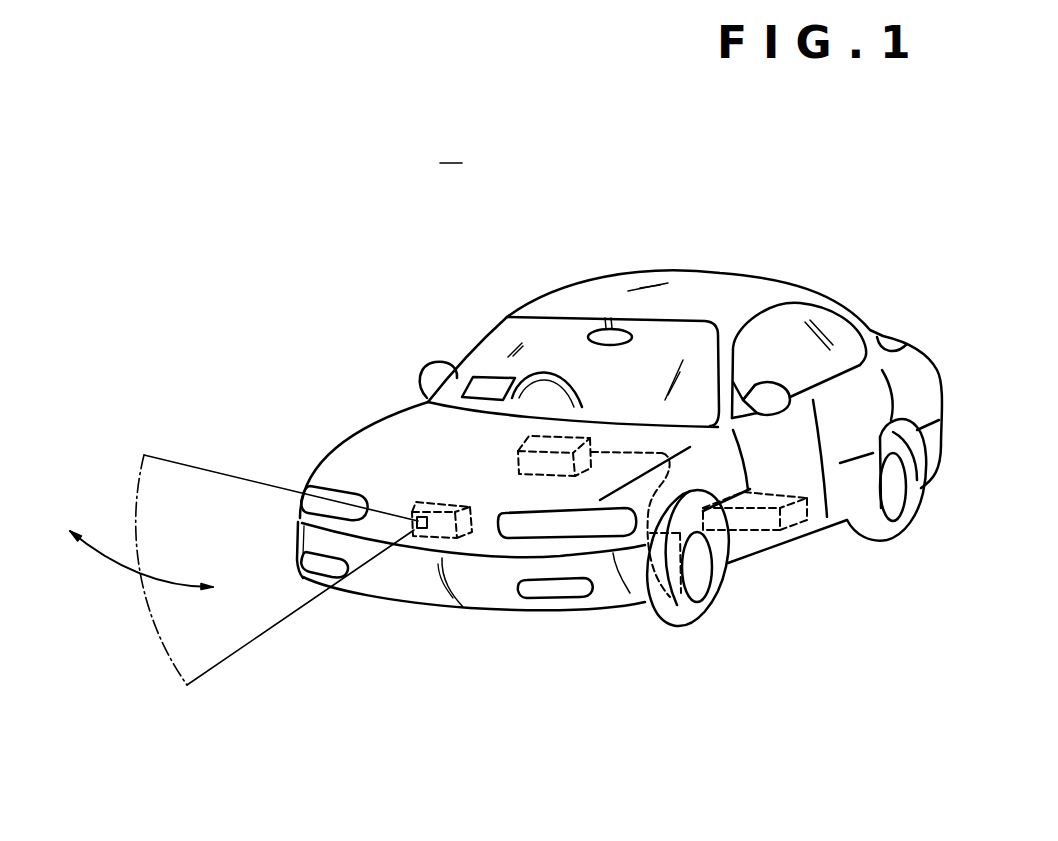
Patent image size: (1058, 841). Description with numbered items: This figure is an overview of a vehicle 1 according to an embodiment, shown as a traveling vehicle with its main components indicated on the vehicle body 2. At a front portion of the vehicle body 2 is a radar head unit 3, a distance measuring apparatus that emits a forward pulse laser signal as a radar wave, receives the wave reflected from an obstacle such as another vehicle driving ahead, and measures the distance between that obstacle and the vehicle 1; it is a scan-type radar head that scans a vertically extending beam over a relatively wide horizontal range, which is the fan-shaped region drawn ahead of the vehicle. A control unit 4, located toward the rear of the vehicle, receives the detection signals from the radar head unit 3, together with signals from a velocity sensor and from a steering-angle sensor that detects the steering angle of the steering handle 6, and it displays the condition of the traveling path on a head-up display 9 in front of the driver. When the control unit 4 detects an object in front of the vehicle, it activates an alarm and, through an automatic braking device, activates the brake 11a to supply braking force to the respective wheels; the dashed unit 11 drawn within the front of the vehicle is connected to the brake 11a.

The vehicle 1 is at (451, 150).
The vehicle body 2 is at (735, 287).
The radar head unit 3 is at (429, 536).
The control unit 4 is at (790, 527).
The steering handle 6 is at (575, 390).
The head-up display 9 is at (487, 378).
The controller 11 is at (518, 462).
The brake 11a is at (642, 590).